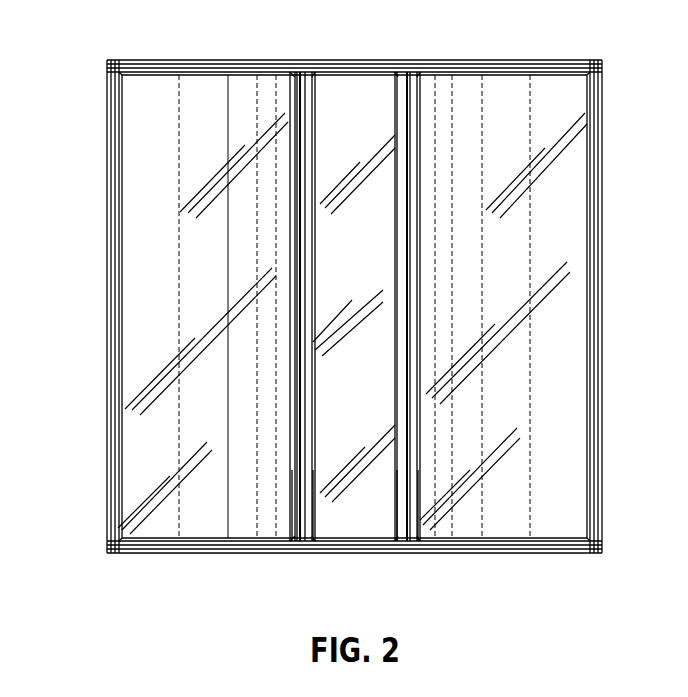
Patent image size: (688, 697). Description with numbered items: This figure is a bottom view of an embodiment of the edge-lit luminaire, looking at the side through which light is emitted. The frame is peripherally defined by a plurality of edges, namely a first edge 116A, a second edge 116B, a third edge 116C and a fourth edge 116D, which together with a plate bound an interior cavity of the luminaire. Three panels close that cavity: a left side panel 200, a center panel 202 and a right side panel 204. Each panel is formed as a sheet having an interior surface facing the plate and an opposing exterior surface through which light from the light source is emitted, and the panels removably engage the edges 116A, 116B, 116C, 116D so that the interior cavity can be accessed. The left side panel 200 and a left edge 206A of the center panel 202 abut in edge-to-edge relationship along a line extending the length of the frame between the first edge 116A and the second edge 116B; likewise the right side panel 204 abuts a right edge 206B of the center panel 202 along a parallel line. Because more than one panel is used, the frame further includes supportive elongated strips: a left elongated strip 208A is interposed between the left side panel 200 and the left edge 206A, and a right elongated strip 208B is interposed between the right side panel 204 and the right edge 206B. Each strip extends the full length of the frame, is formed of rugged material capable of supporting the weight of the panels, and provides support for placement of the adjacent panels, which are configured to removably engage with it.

The first edge 116A is at (108, 342).
The second edge 116B is at (600, 138).
The third edge 116C is at (365, 60).
The fourth edge 116D is at (358, 553).
The left side panel 200 is at (222, 255).
The center panel 202 is at (372, 397).
The right side panel 204 is at (524, 252).
The left edge of the center panel 206A is at (290, 382).
The right edge of the center panel 206B is at (420, 380).
The left elongated strip 208A is at (295, 497).
The right elongated strip 208B is at (418, 487).